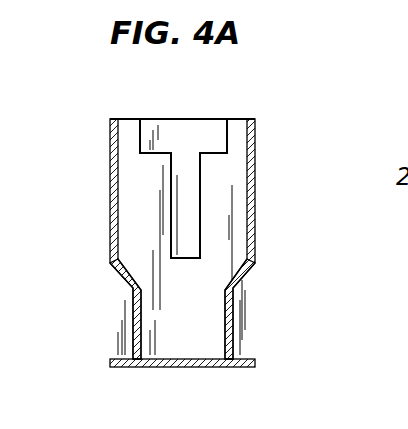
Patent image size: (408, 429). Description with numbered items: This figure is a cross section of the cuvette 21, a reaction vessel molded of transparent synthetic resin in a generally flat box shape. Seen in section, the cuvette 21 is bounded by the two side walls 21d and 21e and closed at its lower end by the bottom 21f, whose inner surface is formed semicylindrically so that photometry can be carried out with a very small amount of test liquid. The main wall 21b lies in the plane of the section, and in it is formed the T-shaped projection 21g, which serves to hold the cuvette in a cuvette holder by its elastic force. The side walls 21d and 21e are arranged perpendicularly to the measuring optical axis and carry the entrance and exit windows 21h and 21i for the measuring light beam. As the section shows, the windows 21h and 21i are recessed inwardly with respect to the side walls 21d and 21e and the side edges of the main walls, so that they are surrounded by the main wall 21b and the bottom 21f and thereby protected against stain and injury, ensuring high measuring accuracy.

The cuvette 21 is at (105, 115).
The main wall 21b is at (215, 180).
The side wall 21d is at (256, 226).
The side wall 21e is at (110, 228).
The bottom 21f is at (192, 368).
The T-shaped projection 21g is at (207, 140).
The entrance window 21h is at (233, 312).
The exit window 21i is at (133, 318).